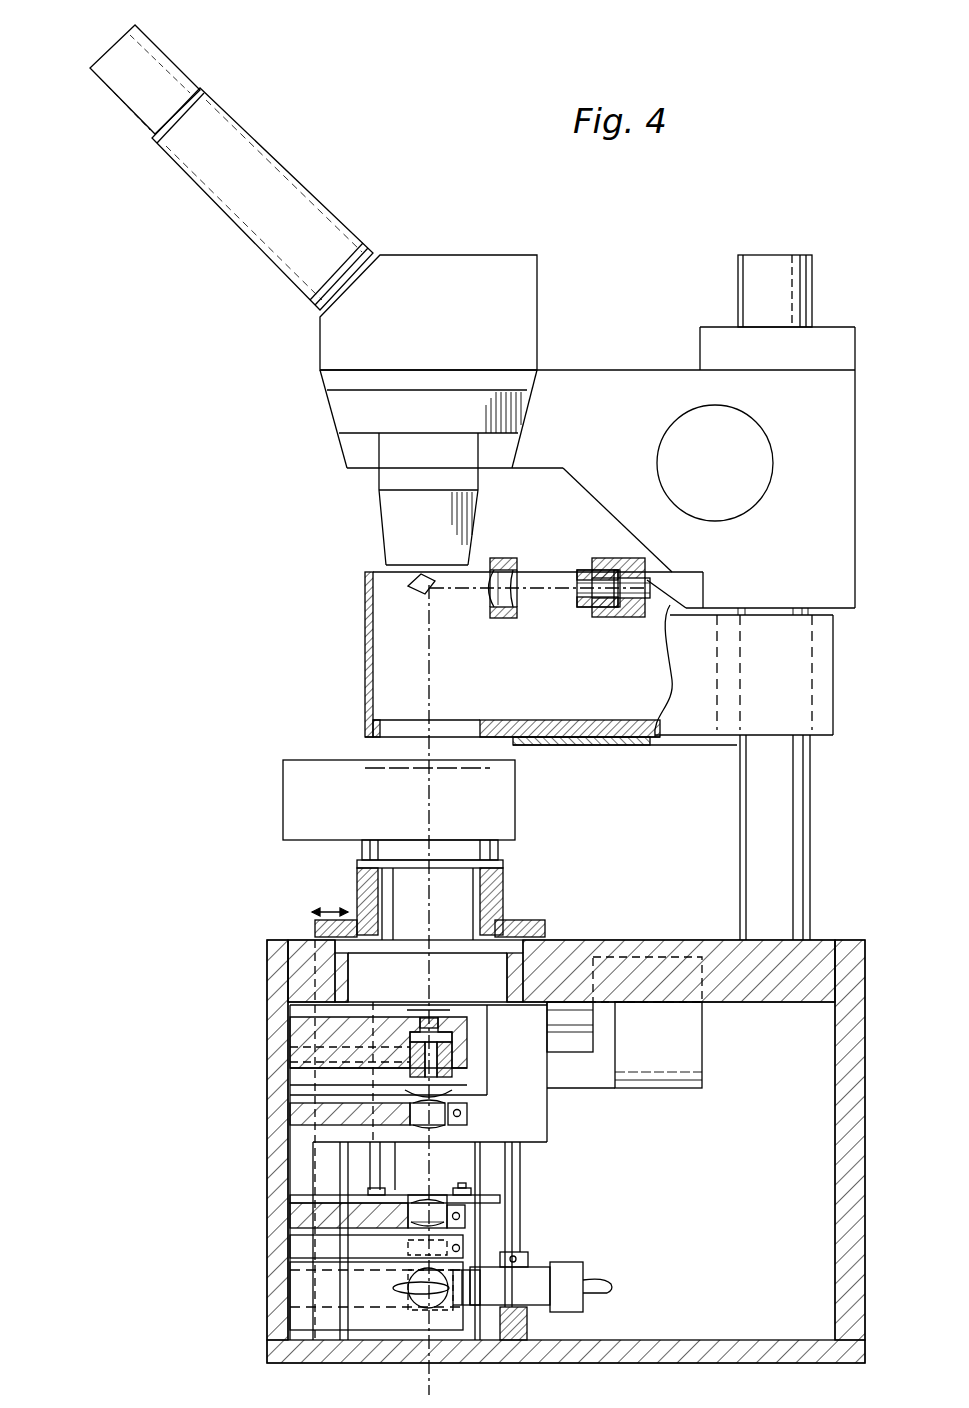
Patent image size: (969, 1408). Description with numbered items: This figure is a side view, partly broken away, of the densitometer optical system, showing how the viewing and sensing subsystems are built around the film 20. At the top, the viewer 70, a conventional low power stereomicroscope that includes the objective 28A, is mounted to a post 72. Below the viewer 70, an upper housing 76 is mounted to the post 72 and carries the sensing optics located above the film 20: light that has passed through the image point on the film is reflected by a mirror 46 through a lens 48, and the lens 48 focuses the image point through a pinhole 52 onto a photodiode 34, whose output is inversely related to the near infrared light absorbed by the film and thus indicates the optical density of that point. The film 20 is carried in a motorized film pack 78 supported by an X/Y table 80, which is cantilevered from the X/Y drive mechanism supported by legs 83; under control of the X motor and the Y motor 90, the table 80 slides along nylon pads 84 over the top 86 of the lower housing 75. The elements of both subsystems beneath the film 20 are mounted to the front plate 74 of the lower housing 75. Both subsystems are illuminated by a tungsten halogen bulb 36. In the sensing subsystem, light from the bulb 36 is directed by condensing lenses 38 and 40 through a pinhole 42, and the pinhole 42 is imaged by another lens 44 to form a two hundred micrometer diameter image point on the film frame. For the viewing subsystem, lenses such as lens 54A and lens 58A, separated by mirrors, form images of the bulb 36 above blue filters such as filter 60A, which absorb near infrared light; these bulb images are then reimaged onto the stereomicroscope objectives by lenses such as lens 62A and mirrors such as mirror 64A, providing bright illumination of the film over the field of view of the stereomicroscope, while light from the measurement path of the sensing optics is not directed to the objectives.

The stereomicroscope objective 28A is at (106, 45).
The viewer 70 is at (452, 243).
The mirror 46 is at (418, 590).
The lens 48 is at (493, 609).
The pinhole 52 is at (597, 607).
The photodiode 34 is at (648, 603).
The upper housing 76 is at (365, 667).
The post 72 is at (813, 808).
The motorized film pack 78 is at (283, 787).
The film 20 is at (490, 768).
The X/Y table 80 is at (518, 920).
The nylon pads 84 is at (316, 928).
The top of the lower housing 86 is at (641, 938).
The front plate 74 is at (267, 1052).
The lower housing 75 is at (668, 1340).
The Y motor 90 is at (694, 1023).
The lens 62A is at (470, 1090).
The mirror 64A is at (418, 1011).
The lens 44 is at (452, 1030).
The pinhole 42 is at (452, 1060).
The condensing lens 40 is at (444, 1125).
The legs 83 is at (341, 1172).
The blue filter 60A is at (408, 1194).
The condensing lens 38 is at (432, 1198).
The lens 58A is at (464, 1244).
The lens 54A is at (440, 1300).
The tungsten halogen bulb 36 is at (407, 1293).